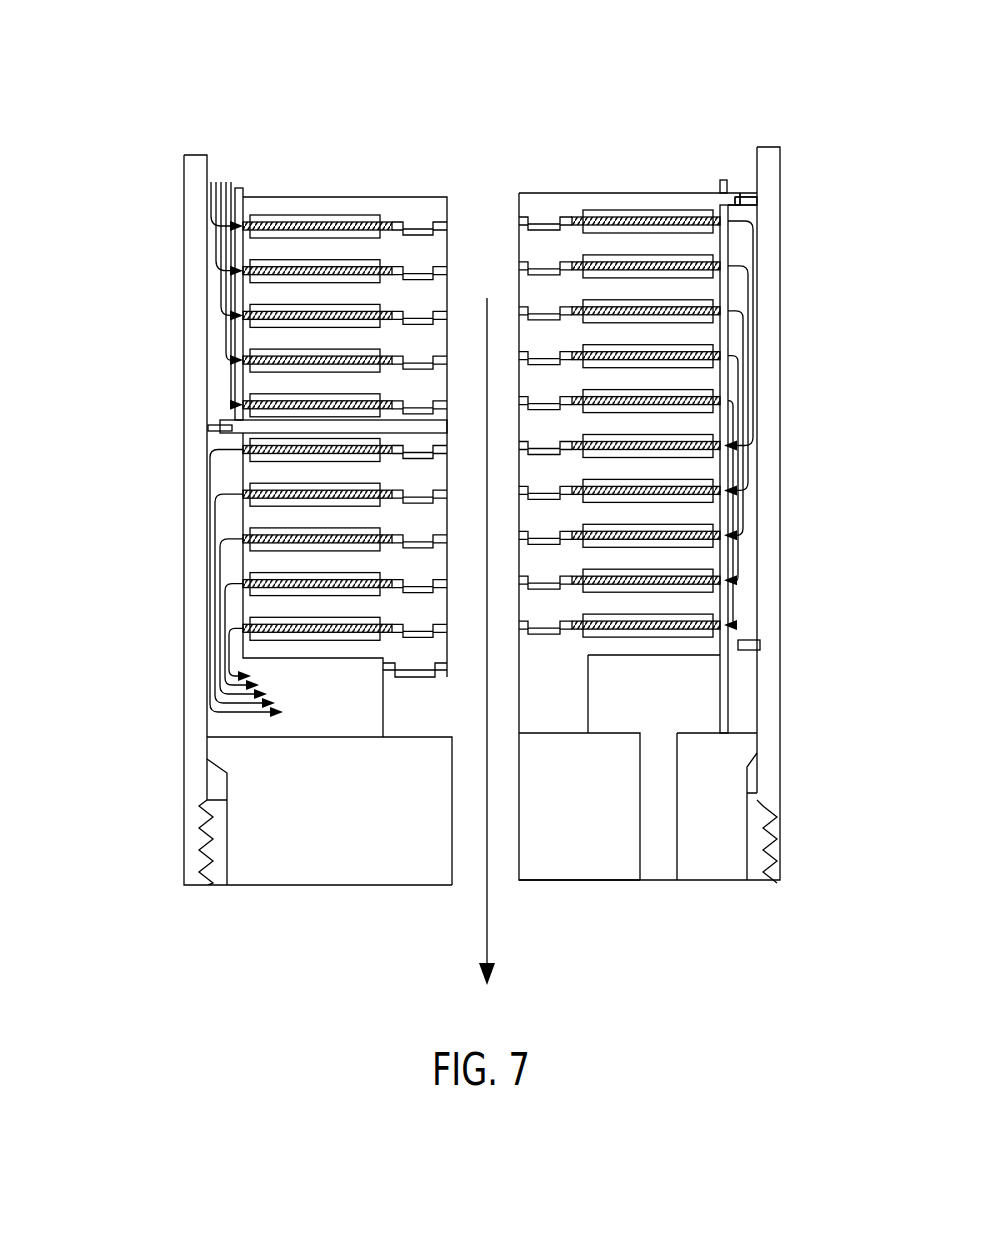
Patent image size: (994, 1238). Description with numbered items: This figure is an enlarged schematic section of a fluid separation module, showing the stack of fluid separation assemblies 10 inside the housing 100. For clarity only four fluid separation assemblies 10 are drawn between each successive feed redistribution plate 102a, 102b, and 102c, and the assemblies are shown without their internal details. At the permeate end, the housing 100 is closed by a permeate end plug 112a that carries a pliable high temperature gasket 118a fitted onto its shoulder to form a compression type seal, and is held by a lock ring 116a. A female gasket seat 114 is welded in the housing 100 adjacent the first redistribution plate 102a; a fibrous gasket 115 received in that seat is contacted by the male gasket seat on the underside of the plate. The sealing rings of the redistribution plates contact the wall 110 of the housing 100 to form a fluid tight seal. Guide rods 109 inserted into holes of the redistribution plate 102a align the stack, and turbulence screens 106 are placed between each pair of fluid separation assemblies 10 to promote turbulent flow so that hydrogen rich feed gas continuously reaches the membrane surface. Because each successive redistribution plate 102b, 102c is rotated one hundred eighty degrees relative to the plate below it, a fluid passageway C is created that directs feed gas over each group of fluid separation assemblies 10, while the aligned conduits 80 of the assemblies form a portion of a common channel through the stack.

The conduit 80 is at (732, 92).
The turbulence screen 106 is at (240, 221).
The fluid passageway C is at (213, 293).
The feed redistribution plate 102b is at (222, 421).
The guide rod 109 is at (725, 181).
The housing 100 is at (195, 752).
The wall 110 is at (213, 787).
The fibrous gasket 115 is at (420, 678).
The female gasket seat 114 is at (557, 718).
The feed redistribution plate 102c is at (739, 190).
The fluid separation assembly 10 is at (719, 243).
The feed redistribution plate 102a is at (753, 640).
The permeate end plug 112a is at (753, 742).
The compressible gasket 118a is at (763, 777).
The lock ring 116a is at (760, 828).